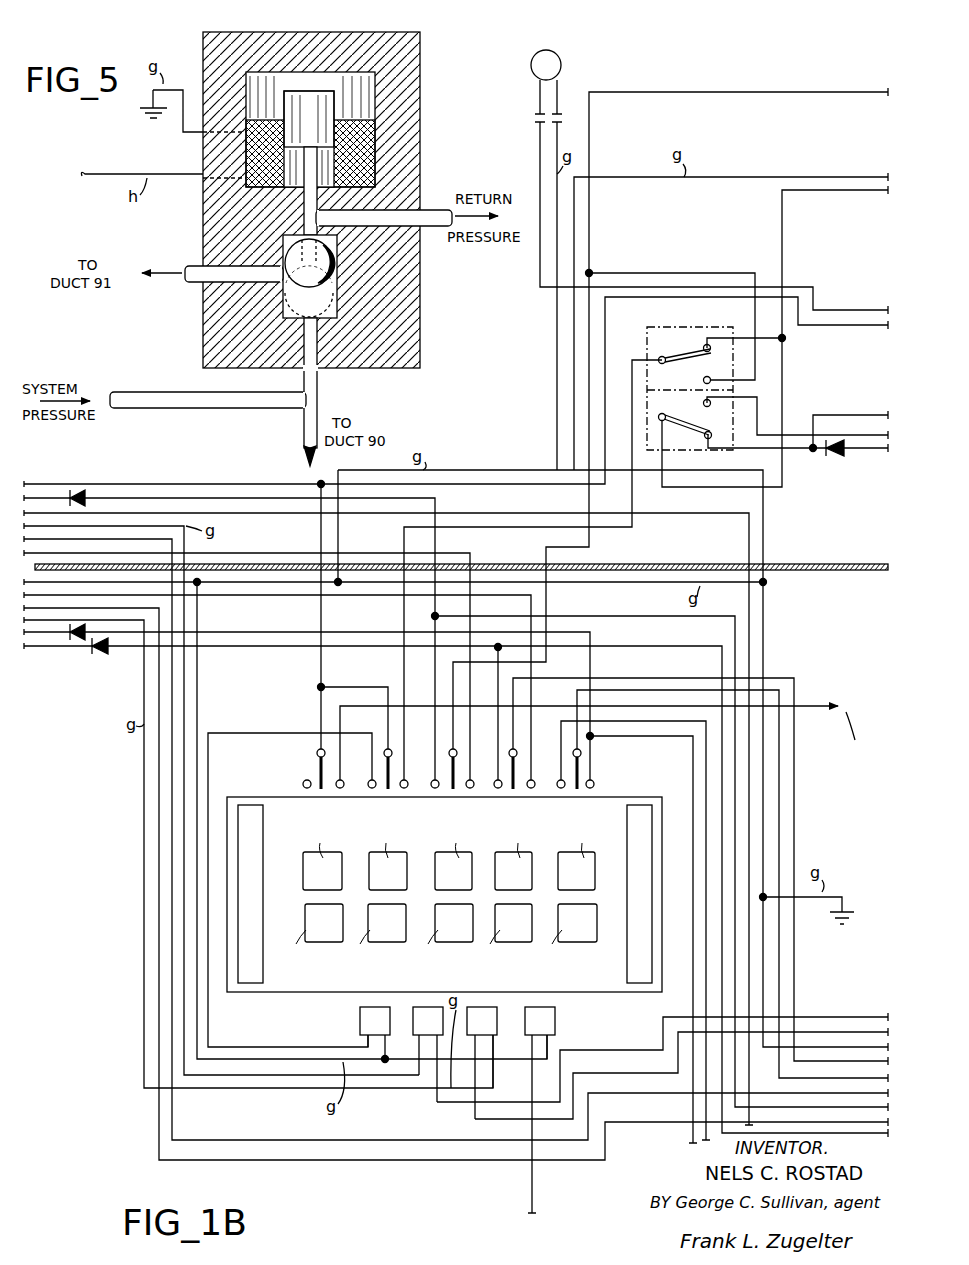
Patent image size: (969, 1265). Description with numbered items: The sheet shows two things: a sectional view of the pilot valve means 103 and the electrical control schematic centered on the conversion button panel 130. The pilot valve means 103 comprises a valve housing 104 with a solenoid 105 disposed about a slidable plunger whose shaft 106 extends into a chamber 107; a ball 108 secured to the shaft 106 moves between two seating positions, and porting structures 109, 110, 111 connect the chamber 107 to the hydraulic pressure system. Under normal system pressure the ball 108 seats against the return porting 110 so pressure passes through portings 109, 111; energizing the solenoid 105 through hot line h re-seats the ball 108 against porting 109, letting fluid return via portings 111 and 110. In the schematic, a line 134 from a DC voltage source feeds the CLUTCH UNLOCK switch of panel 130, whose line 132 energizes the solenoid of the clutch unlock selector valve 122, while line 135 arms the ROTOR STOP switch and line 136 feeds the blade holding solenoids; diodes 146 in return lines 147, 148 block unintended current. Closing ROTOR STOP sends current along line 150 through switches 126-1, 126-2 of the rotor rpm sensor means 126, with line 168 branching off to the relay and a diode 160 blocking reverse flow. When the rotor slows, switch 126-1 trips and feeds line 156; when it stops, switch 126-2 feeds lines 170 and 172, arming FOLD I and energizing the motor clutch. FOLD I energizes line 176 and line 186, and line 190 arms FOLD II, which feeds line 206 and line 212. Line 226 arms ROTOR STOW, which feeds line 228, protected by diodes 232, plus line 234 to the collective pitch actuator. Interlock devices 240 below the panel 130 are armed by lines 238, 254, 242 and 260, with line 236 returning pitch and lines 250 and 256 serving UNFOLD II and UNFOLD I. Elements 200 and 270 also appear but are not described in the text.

In FIG. 5, the pilot valve means 103 is at (445, 128).
In FIG. 5, the valve housing 104 is at (400, 90).
In FIG. 5, the solenoid 105 is at (366, 152).
In FIG. 5, the shaft 106 is at (304, 200).
In FIG. 5, the chamber 107 is at (292, 240).
In FIG. 5, the ball 108 is at (322, 262).
In FIG. 5, the porting 109 is at (318, 372).
In FIG. 5, the porting 110 is at (418, 228).
In FIG. 5, the porting 111 is at (206, 283).
In FIG. 1B, the main rotor CLUTCH UNLOCK selector valve 122 is at (562, 63).
In FIG. 1B, the rotor rpm sensor means 126 is at (700, 330).
In FIG. 1B, the sensor switch 126-1 is at (693, 422).
In FIG. 1B, the sensor stop switch 126-2 is at (683, 369).
In FIG. 1B, the conversion button panel 130 is at (288, 790).
In FIG. 1B, the line 132 is at (540, 132).
In FIG. 1B, the line 134 is at (812, 707).
In FIG. 1B, the line 135 is at (388, 686).
In FIG. 1B, the line 136 is at (245, 483).
In FIG. 1B, the diodes 146 is at (82, 489).
In FIG. 1B, the line 147 is at (160, 497).
In FIG. 1B, the line 148 is at (214, 648).
In FIG. 1B, the line 150 is at (783, 340).
In FIG. 1B, the line 156 is at (757, 412).
In FIG. 1B, the diode 160 is at (840, 456).
In FIG. 1B, the line 168 is at (782, 236).
In FIG. 1B, the line 170 is at (672, 273).
In FIG. 1B, the line 172 is at (590, 150).
In FIG. 1B, the line 176 is at (470, 757).
In FIG. 1B, the line 186 is at (170, 790).
In FIG. 1B, the line 190 is at (620, 678).
In FIG. 1B, the conductor 200 is at (250, 514).
In FIG. 1B, the line 206 is at (228, 596).
In FIG. 1B, the line 212 is at (158, 756).
In FIG. 1B, the line 226 is at (780, 812).
In FIG. 1B, the line 228 is at (258, 632).
In FIG. 1B, the diodes 232 is at (80, 642).
In FIG. 1B, the line 234 is at (640, 738).
In FIG. 1B, the line 236 is at (704, 794).
In FIG. 1B, the line 238 is at (532, 1190).
In FIG. 1B, the interlock devices 240 is at (350, 1016).
In FIG. 1B, the line 242 is at (437, 1096).
In FIG. 1B, the line 250 is at (498, 700).
In FIG. 1B, the line 254 is at (474, 1110).
In FIG. 1B, the line 256 is at (435, 705).
In FIG. 1B, the line 260 is at (258, 733).
In FIG. 1B, the bulkhead 270 is at (658, 564).